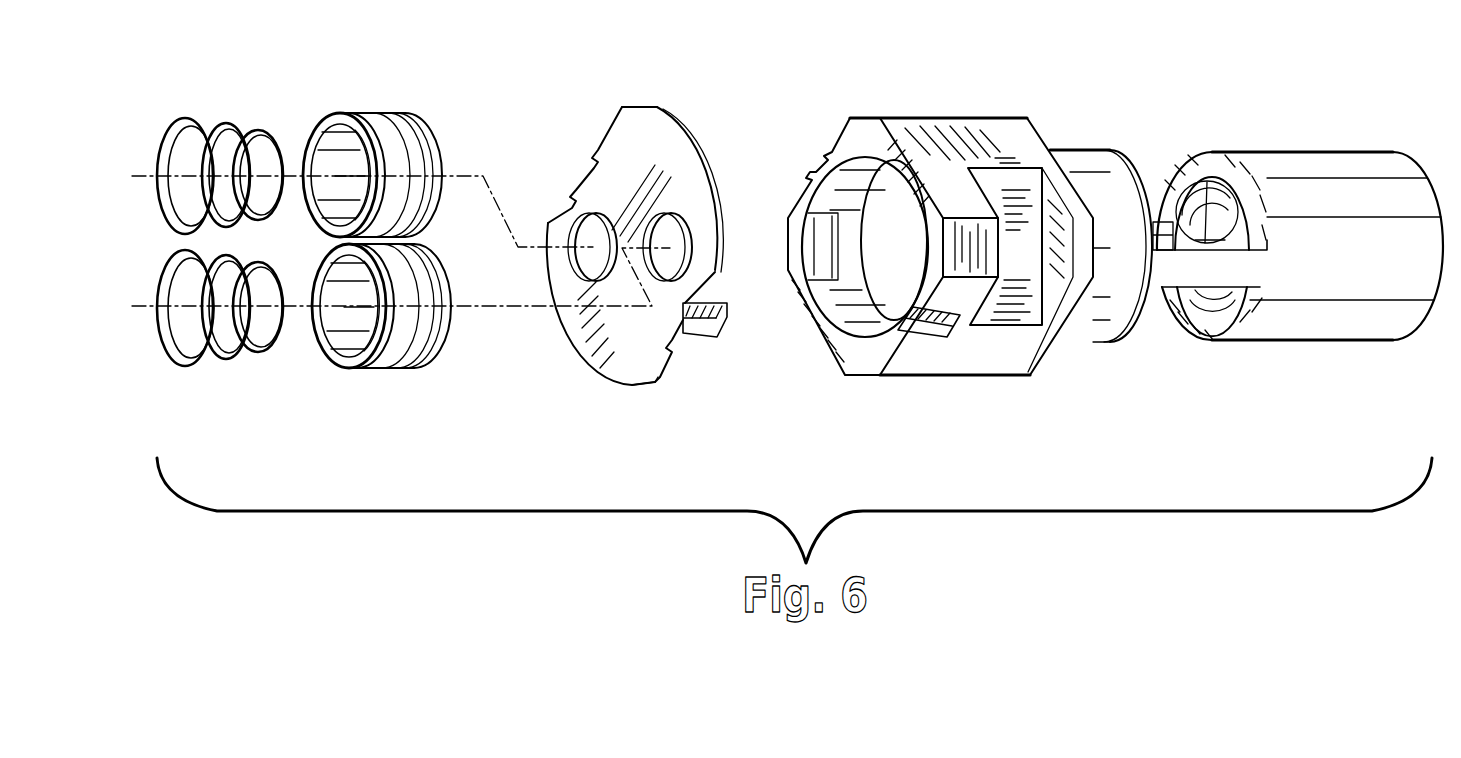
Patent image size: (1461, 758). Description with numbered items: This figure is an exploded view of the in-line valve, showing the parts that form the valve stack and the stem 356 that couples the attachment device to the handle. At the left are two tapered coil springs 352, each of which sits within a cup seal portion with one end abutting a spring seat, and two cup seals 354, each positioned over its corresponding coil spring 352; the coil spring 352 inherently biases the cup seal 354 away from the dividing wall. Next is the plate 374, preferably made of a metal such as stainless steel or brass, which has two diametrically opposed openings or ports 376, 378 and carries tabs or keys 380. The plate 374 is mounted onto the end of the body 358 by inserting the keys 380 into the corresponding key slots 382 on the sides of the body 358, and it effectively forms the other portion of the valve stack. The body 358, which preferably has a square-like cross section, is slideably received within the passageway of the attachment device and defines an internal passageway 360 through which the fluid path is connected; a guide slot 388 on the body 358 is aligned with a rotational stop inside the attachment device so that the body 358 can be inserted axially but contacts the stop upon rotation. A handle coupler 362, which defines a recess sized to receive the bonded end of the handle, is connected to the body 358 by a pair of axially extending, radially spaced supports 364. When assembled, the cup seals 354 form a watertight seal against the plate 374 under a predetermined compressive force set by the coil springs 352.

The tapered coil spring 352 is at (172, 135).
The cup seal 354 is at (377, 113).
The stem 356 is at (1106, 147).
The body 358 is at (1005, 117).
The internal passageway 360 is at (908, 267).
The handle coupler 362 is at (1333, 343).
The supports 364 is at (1158, 215).
The plate 374 is at (678, 112).
The port 376 is at (590, 235).
The port 378 is at (672, 235).
The key 380 is at (718, 337).
The key slot 382 is at (937, 333).
The guide slot 388 is at (1005, 305).